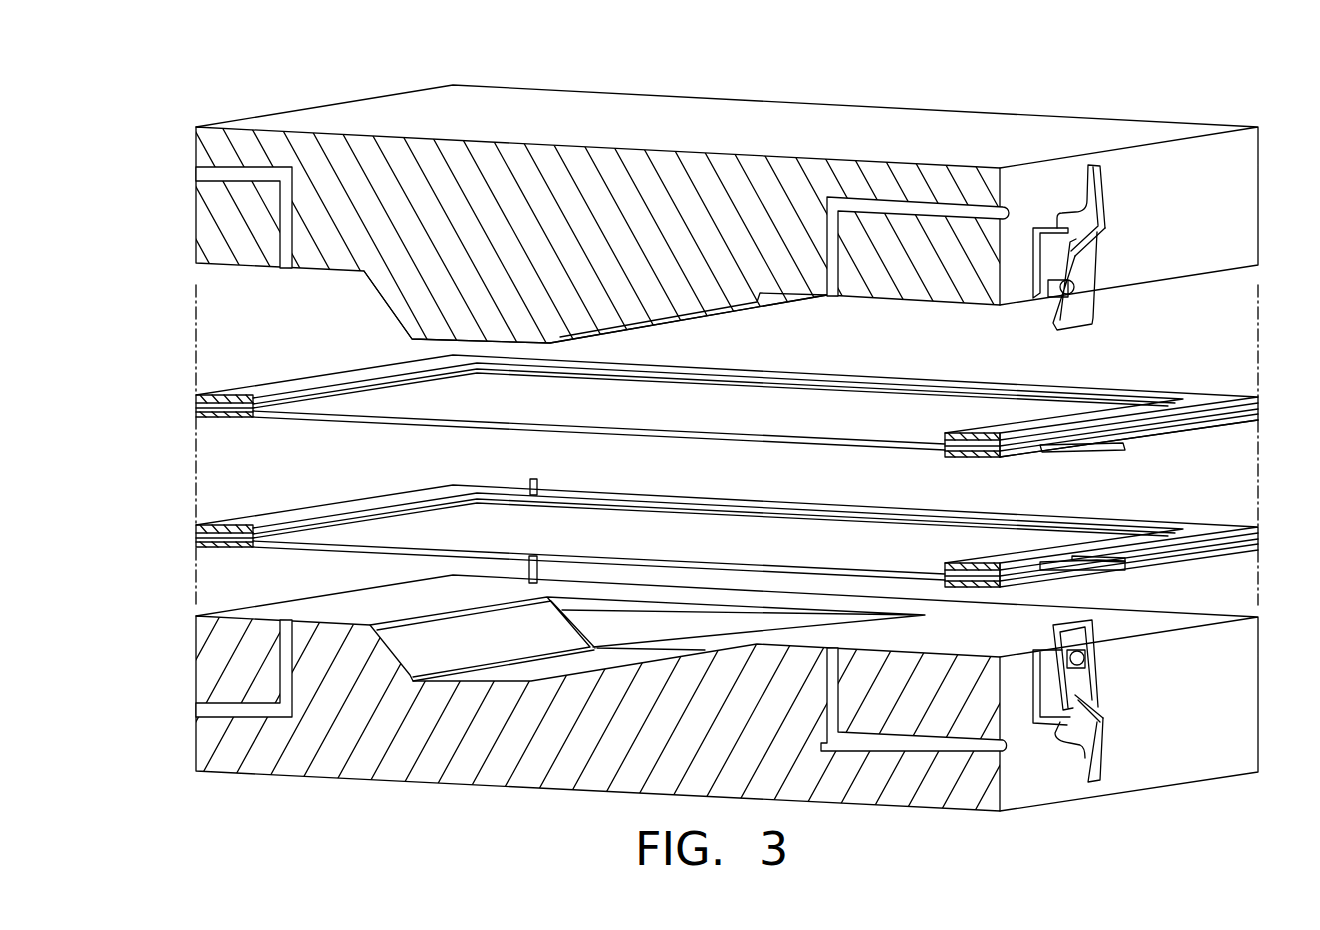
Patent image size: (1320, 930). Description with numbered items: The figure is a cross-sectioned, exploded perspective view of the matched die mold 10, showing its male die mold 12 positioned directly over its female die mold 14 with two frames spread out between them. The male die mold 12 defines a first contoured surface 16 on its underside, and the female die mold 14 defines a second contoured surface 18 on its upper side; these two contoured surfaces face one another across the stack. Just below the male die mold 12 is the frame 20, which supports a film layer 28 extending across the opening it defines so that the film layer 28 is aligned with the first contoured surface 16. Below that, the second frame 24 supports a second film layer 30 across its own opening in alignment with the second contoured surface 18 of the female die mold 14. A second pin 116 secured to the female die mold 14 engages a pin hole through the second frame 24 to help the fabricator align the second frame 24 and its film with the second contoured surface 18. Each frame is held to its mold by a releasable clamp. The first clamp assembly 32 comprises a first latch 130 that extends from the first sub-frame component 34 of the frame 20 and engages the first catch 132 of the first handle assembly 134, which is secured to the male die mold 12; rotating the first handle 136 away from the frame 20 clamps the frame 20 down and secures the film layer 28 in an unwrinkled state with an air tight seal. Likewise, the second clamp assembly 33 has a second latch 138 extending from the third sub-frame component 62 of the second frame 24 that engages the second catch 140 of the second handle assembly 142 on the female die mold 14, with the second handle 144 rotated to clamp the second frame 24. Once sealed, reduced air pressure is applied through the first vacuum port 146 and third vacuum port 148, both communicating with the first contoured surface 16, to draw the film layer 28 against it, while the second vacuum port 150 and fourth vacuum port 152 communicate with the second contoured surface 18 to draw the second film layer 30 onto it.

The matched die mold 10 is at (1180, 100).
The male die mold 12 is at (745, 118).
The female die mold 14 is at (440, 765).
The first contoured surface 16 is at (386, 300).
The second contoured surface 18 is at (437, 638).
The frame 20 is at (288, 365).
The second frame 24 is at (288, 500).
The film layer 28 is at (950, 405).
The second film layer 30 is at (925, 535).
The first clamp assembly 32 is at (1118, 262).
The second clamp assembly 33 is at (1120, 680).
The first sub-frame component 34 is at (1197, 428).
The third sub-frame component 62 is at (1100, 549).
The second pin 116 is at (541, 484).
The first latch 130 is at (1112, 449).
The first catch 132 is at (1093, 308).
The first handle assembly 134 is at (1140, 193).
The first handle 136 is at (1098, 166).
The second latch 138 is at (1110, 564).
The second catch 140 is at (1096, 655).
The second handle assembly 142 is at (1140, 715).
The second handle 144 is at (1100, 760).
The first vacuum port 146 is at (912, 210).
The third vacuum port 148 is at (243, 172).
The second vacuum port 150 is at (950, 745).
The fourth vacuum port 152 is at (240, 705).